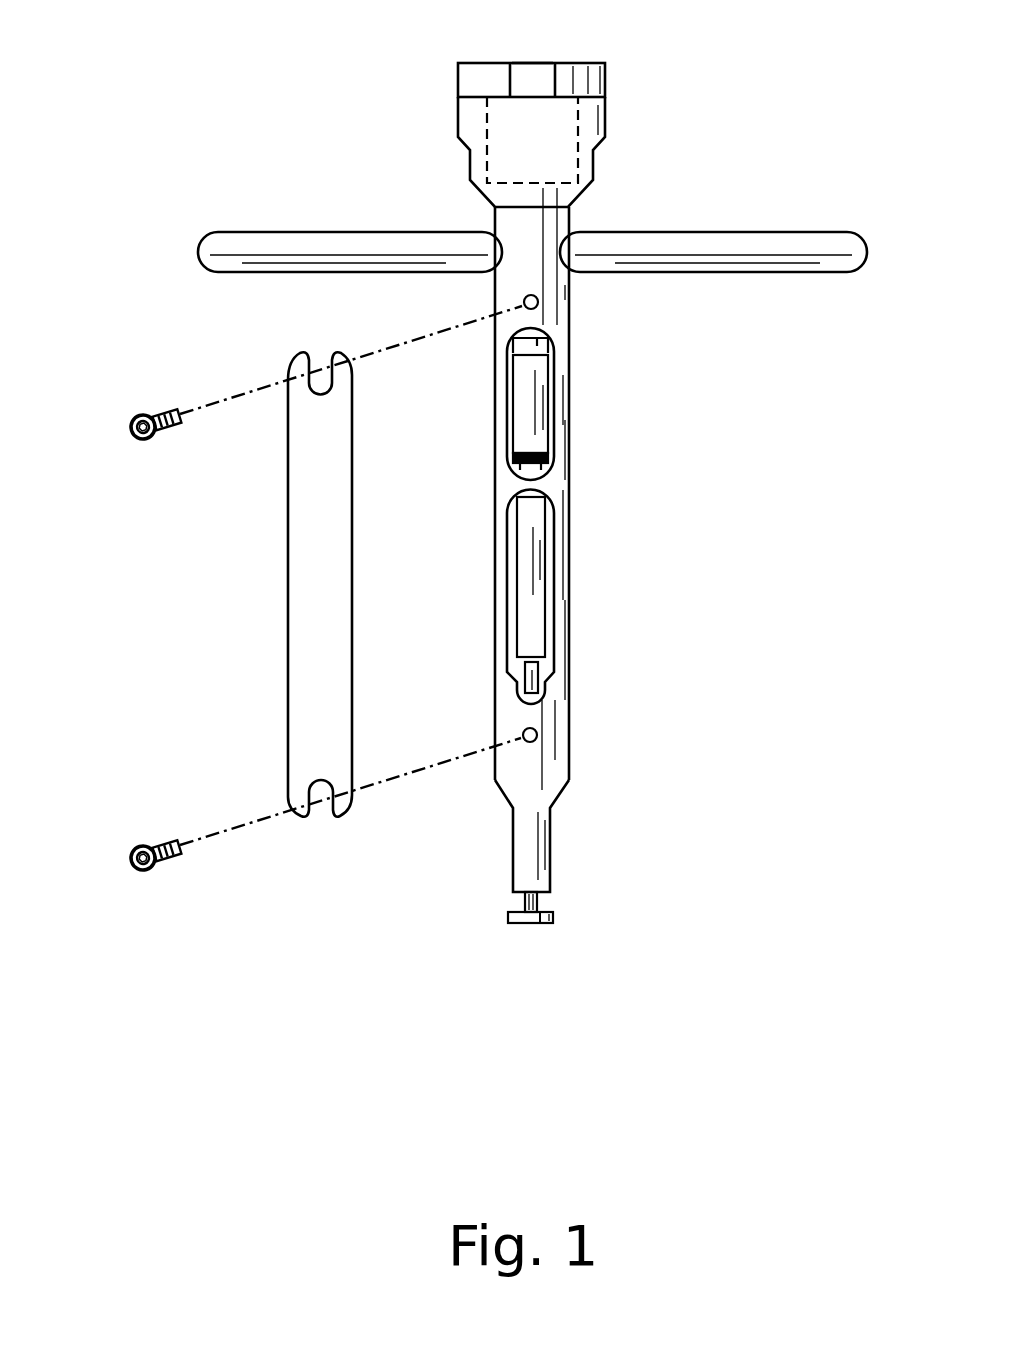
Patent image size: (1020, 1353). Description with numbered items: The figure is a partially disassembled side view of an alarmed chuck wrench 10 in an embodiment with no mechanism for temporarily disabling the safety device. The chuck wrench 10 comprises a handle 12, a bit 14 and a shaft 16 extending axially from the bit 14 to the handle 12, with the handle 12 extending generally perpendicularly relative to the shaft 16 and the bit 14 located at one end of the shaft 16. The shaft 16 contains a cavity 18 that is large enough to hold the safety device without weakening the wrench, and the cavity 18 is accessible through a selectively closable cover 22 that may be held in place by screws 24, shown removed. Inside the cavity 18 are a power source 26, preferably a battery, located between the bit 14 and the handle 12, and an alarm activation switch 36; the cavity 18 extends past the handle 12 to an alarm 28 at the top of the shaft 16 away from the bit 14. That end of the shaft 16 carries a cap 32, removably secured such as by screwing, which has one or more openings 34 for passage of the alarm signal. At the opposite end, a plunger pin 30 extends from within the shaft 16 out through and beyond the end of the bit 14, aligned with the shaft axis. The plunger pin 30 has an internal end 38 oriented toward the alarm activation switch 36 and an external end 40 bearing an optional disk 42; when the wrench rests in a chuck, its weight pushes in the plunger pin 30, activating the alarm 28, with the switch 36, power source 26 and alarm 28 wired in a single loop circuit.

The chuck wrench 10 is at (815, 555).
The handle 12 is at (712, 255).
The bit 14 is at (513, 857).
The shaft 16 is at (494, 466).
The cavity 18 is at (551, 640).
The cover 22 is at (310, 580).
The screws 24 is at (130, 440).
The power source 26 is at (537, 425).
The alarm 28 is at (518, 125).
The plunger pin 30 is at (528, 785).
The cap 32 is at (483, 82).
The openings 34 is at (532, 63).
The alarm activation switch 36 is at (530, 565).
The internal end 38 is at (525, 675).
The external end 40 is at (540, 902).
The disk 42 is at (553, 918).